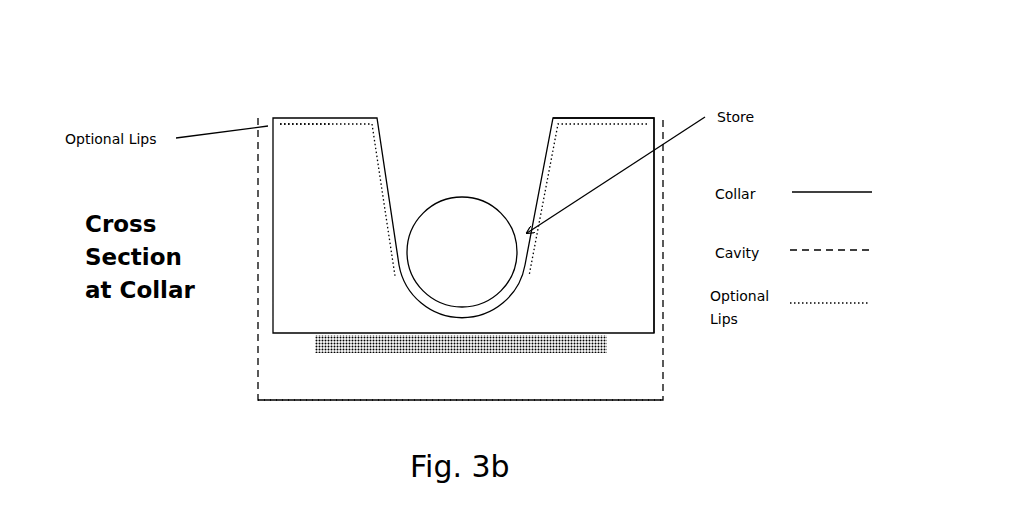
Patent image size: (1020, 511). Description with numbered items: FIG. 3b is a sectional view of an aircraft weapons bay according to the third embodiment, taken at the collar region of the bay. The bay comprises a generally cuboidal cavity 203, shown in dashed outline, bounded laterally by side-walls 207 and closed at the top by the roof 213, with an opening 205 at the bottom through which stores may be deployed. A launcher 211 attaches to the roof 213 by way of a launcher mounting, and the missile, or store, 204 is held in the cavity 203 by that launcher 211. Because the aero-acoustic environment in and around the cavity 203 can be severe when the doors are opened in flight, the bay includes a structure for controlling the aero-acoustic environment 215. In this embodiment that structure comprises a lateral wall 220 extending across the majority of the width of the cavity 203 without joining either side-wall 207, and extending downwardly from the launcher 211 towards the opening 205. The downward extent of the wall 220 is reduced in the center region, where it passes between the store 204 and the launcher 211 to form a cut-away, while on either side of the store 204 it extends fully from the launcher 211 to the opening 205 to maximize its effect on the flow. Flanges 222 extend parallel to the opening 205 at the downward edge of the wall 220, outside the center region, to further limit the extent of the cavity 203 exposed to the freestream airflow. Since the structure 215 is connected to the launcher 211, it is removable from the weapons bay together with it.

The cavity 203 is at (264, 213).
The store 204 is at (482, 268).
The opening 205 is at (287, 112).
The side-walls 207 is at (257, 349).
The launcher 211 is at (551, 346).
The roof 213 is at (329, 402).
The structure for controlling the aero-acoustic environment 215 is at (594, 156).
The lateral wall 220 is at (630, 254).
The flanges 222 is at (343, 122).